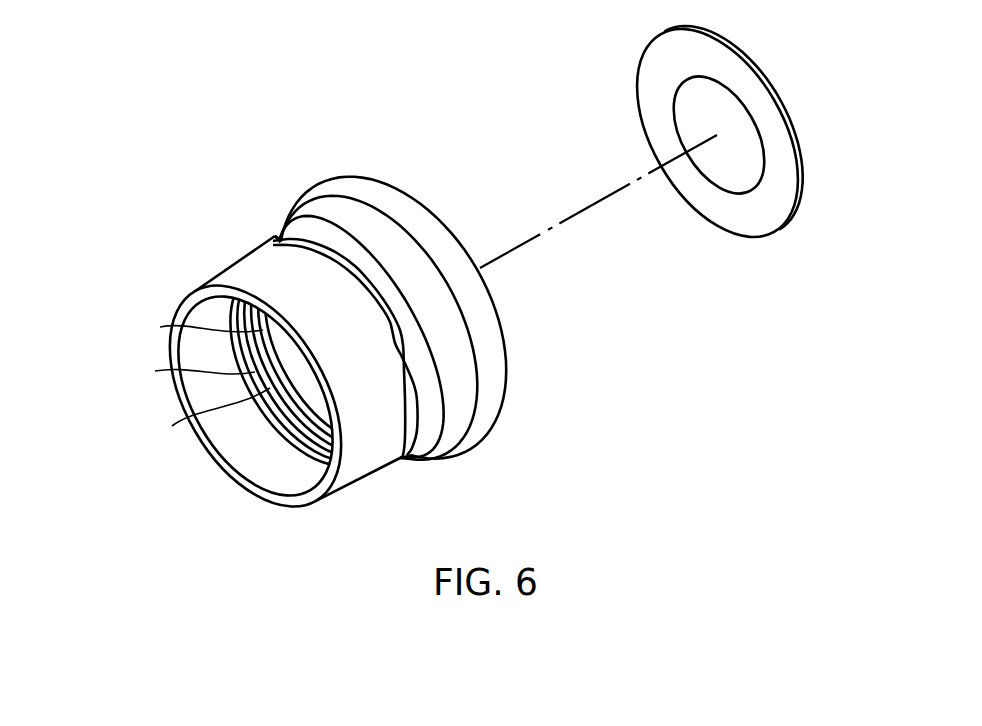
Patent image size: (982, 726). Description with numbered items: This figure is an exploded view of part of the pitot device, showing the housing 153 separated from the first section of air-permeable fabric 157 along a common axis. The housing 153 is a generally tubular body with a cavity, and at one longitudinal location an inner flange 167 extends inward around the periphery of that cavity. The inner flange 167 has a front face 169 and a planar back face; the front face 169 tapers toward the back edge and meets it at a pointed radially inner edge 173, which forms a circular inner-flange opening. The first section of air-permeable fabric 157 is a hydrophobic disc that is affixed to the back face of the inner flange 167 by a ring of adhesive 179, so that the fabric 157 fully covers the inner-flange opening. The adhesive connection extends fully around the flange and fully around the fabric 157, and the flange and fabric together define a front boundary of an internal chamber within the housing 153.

The housing 153 is at (233, 265).
The first section of air-permeable fabric 157 is at (640, 118).
The inner flange 167 is at (181, 373).
The front face 169 is at (194, 416).
The radially inner edge 173 is at (187, 330).
The ring of adhesive 179 is at (755, 223).